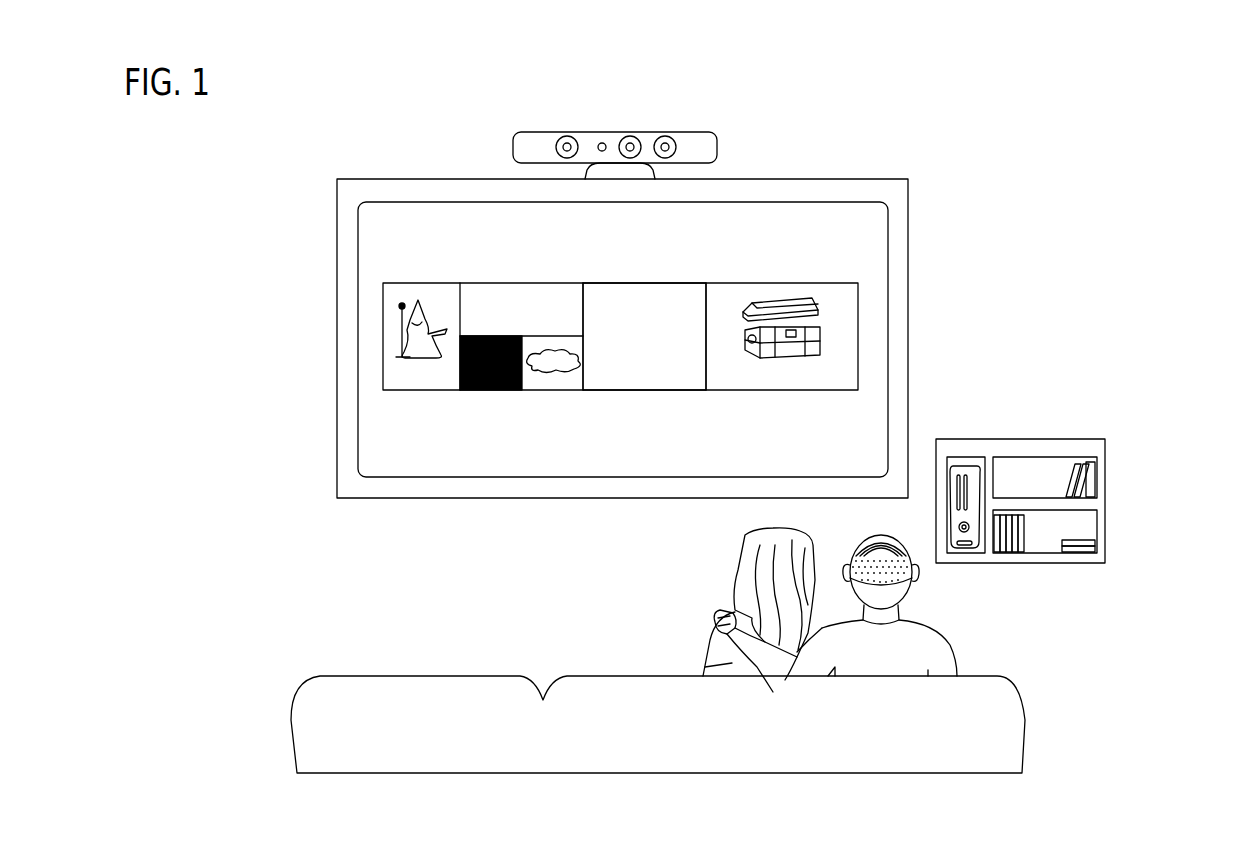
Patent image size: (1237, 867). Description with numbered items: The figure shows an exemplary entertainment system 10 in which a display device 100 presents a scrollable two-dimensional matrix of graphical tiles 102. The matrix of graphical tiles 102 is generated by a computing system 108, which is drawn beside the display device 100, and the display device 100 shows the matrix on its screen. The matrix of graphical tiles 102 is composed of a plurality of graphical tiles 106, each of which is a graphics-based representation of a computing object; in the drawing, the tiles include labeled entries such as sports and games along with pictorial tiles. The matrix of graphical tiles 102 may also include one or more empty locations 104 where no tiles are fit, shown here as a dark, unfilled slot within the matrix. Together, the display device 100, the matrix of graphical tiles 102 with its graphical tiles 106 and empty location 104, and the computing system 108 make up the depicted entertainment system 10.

The entertainment system 10 is at (1138, 116).
The display device 100 is at (860, 179).
The matrix of graphical tiles 102 is at (705, 255).
The empty location 104 is at (488, 390).
The graphical tile 106 is at (661, 390).
The computing system 108 is at (967, 553).